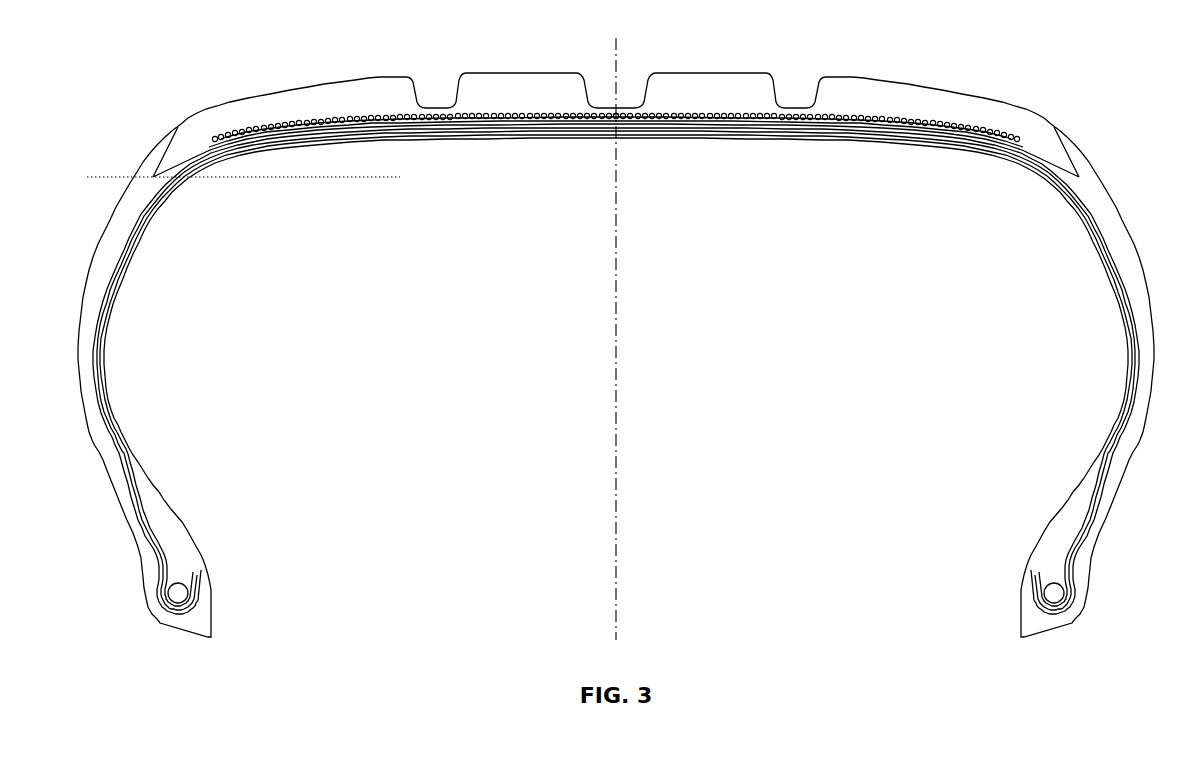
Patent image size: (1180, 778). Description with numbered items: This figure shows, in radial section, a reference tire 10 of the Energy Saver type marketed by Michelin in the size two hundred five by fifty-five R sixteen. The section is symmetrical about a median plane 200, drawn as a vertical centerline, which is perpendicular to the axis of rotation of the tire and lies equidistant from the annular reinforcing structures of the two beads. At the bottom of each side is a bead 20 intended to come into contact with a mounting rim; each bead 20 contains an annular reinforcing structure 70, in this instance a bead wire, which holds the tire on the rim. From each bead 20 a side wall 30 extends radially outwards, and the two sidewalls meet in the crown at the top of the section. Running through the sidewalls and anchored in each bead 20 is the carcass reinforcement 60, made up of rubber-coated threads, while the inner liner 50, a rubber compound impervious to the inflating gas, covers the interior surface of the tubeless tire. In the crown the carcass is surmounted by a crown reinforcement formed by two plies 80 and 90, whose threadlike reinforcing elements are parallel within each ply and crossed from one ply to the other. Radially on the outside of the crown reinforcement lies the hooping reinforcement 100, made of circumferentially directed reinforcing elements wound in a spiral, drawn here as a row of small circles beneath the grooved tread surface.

The tire 10 is at (1115, 125).
The bead 20 is at (148, 570).
The side wall 30 is at (104, 258).
The inner liner 50 is at (103, 313).
The carcass reinforcement 60 is at (92, 343).
The annular reinforcing structure 70 is at (172, 598).
The ply 80 is at (555, 138).
The ply 90 is at (496, 136).
The hooping reinforcement 100 is at (366, 118).
The median plane 200 is at (617, 176).